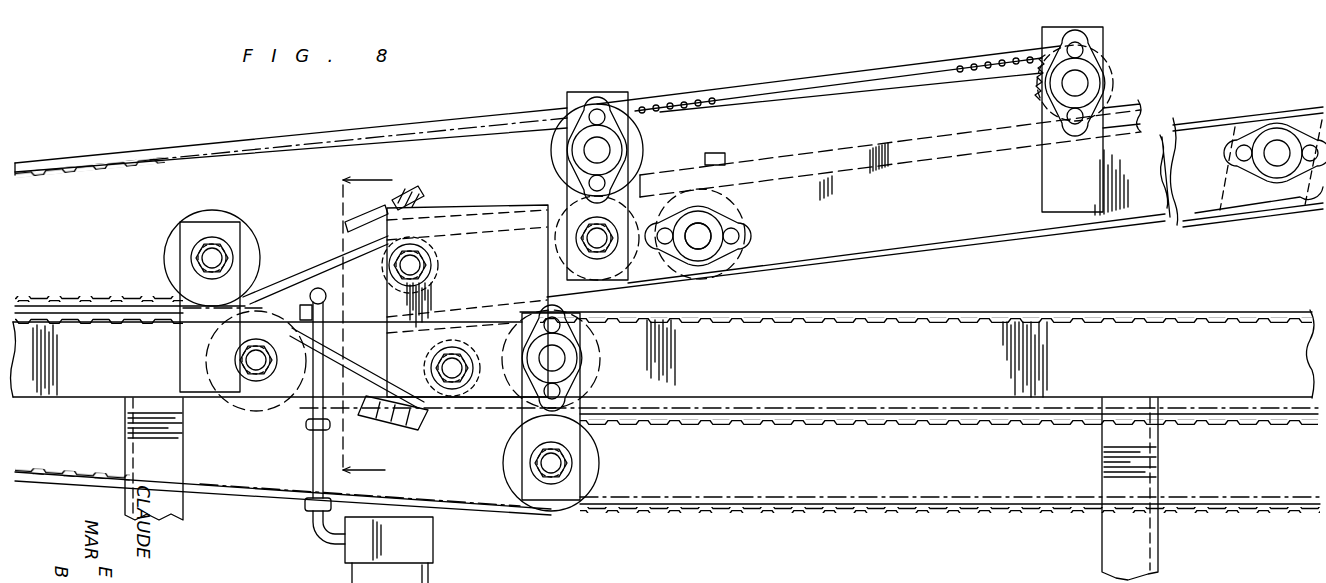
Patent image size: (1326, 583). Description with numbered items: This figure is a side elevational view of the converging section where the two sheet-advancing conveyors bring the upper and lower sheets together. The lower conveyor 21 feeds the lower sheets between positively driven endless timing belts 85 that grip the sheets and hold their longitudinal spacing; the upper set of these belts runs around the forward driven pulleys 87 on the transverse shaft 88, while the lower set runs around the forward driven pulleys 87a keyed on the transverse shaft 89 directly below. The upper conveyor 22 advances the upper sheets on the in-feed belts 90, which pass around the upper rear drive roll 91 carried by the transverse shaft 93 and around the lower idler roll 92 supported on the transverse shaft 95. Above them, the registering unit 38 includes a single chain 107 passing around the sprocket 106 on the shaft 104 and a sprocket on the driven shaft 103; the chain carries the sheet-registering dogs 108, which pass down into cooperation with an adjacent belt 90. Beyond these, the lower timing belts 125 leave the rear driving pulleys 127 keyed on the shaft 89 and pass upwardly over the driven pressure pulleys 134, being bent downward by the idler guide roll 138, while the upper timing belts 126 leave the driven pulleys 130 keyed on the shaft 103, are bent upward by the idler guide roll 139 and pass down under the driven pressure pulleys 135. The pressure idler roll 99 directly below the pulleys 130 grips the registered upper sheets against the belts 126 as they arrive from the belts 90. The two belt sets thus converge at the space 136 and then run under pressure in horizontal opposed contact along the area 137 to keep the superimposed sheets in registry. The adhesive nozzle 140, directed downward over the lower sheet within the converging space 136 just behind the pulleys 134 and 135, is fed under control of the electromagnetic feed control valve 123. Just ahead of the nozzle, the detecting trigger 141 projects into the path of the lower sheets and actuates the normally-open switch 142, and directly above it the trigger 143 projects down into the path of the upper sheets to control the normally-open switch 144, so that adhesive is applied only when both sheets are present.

The sheet-advancing conveyor 21 is at (1025, 304).
The conveyor 22 is at (832, 195).
The registering unit 38 is at (833, 146).
The timing belts 85 is at (822, 316).
The forward driven pulleys 87 is at (592, 385).
The forward driven pulleys 87a is at (592, 468).
The transverse shaft 88 is at (560, 358).
The transverse shaft 89 is at (556, 462).
The belts 90 is at (1203, 122).
The upper and rear drive roll 91 is at (1238, 207).
The lower idler roll 92 is at (735, 252).
The transverse shaft 93 is at (1279, 148).
The transverse shaft 95 is at (702, 247).
The pressure idler roll 99 is at (812, 158).
The driven shaft 103 is at (600, 150).
The shaft 104 is at (1082, 82).
The sprocket 106 is at (1038, 78).
The chain 107 is at (765, 88).
The sheet-registering dogs 108 is at (1120, 115).
The electromagnetic feed control valve 123 is at (305, 512).
The lower timing belts 125 is at (76, 318).
The upper timing belts 126 is at (413, 122).
The rear driving pulleys 127 is at (502, 440).
The driven pulleys 130 is at (556, 140).
The driven pressure pulleys 134 is at (258, 402).
The driven pressure pulleys 135 is at (172, 240).
The converging relationship 136 is at (267, 300).
The area of horizontal opposed contacting relationship 137 is at (127, 316).
The idler guide roll 138 is at (478, 418).
The idler guide roll 139 is at (442, 243).
The nozzle 140 is at (316, 288).
The detecting finger or trigger 141 is at (360, 324).
The normally-open electric switch 142 is at (392, 415).
The trigger 143 is at (345, 218).
The normally-open switch 144 is at (353, 203).